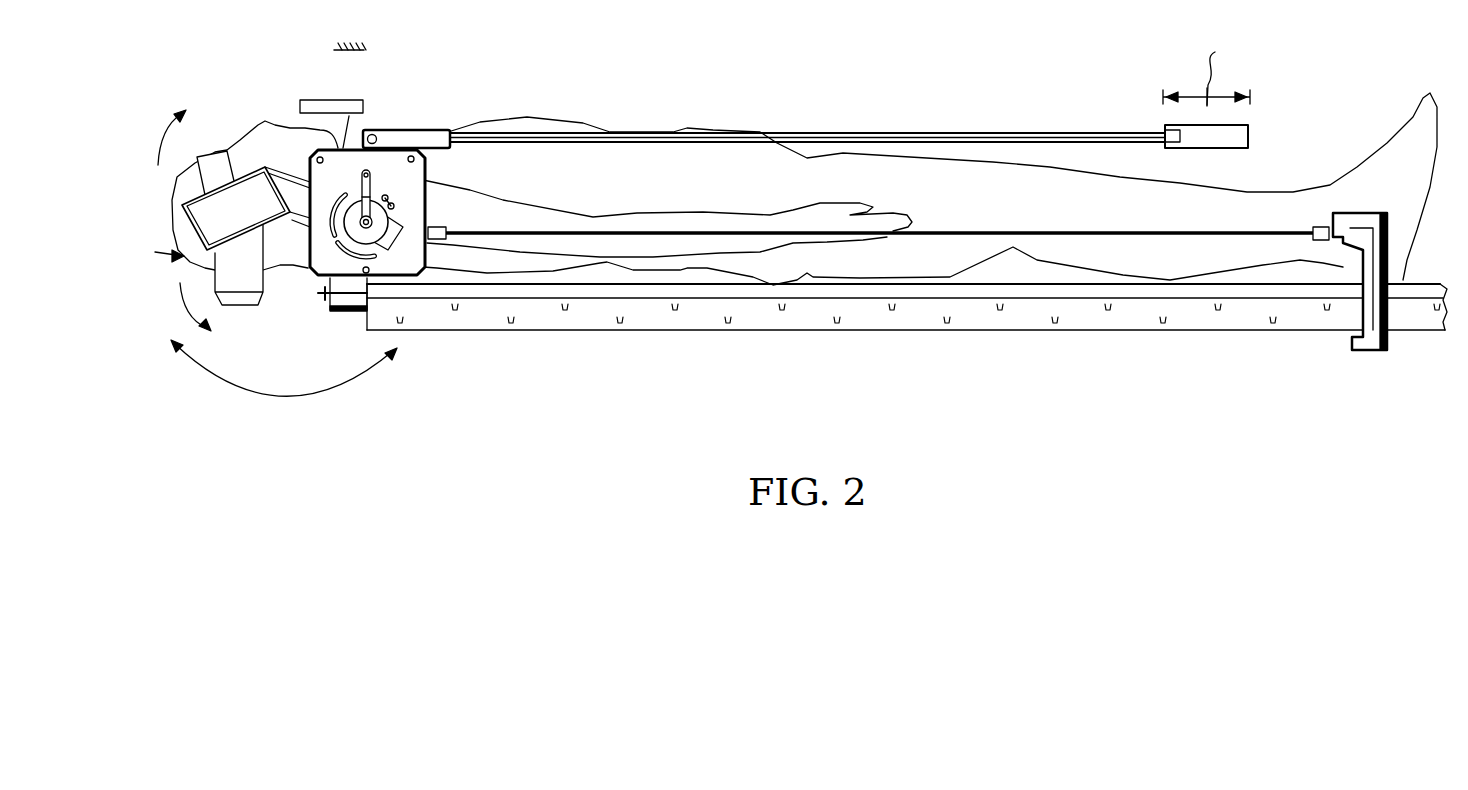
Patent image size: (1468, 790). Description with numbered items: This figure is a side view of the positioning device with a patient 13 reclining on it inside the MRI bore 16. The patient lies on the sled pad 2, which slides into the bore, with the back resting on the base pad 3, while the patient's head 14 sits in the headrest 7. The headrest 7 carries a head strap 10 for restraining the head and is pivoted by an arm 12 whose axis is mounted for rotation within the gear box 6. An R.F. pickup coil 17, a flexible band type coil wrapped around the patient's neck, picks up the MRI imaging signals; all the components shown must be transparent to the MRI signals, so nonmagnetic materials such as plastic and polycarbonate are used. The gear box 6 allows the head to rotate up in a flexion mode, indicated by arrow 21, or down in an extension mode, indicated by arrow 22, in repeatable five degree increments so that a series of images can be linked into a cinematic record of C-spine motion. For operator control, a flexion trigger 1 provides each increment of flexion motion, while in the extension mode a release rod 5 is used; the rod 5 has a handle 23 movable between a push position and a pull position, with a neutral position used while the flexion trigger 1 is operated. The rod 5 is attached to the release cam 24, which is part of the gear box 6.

The flexion trigger 1 is at (1373, 353).
The sled pad 2 is at (948, 332).
The base pad 3 is at (285, 364).
The release rod 5 is at (768, 133).
The gear box 6 is at (412, 255).
The headrest 7 is at (161, 252).
The head strap 10 is at (213, 151).
The arm 12 is at (244, 229).
The patient 13 is at (998, 162).
The patient's head 14 is at (177, 177).
The MRI bore 16 is at (354, 42).
The R.F. pickup coil 17 is at (364, 104).
The flexion arrow 21 is at (161, 162).
The extension arrow 22 is at (190, 313).
The handle 23 is at (1250, 137).
The release cam 24 is at (353, 148).